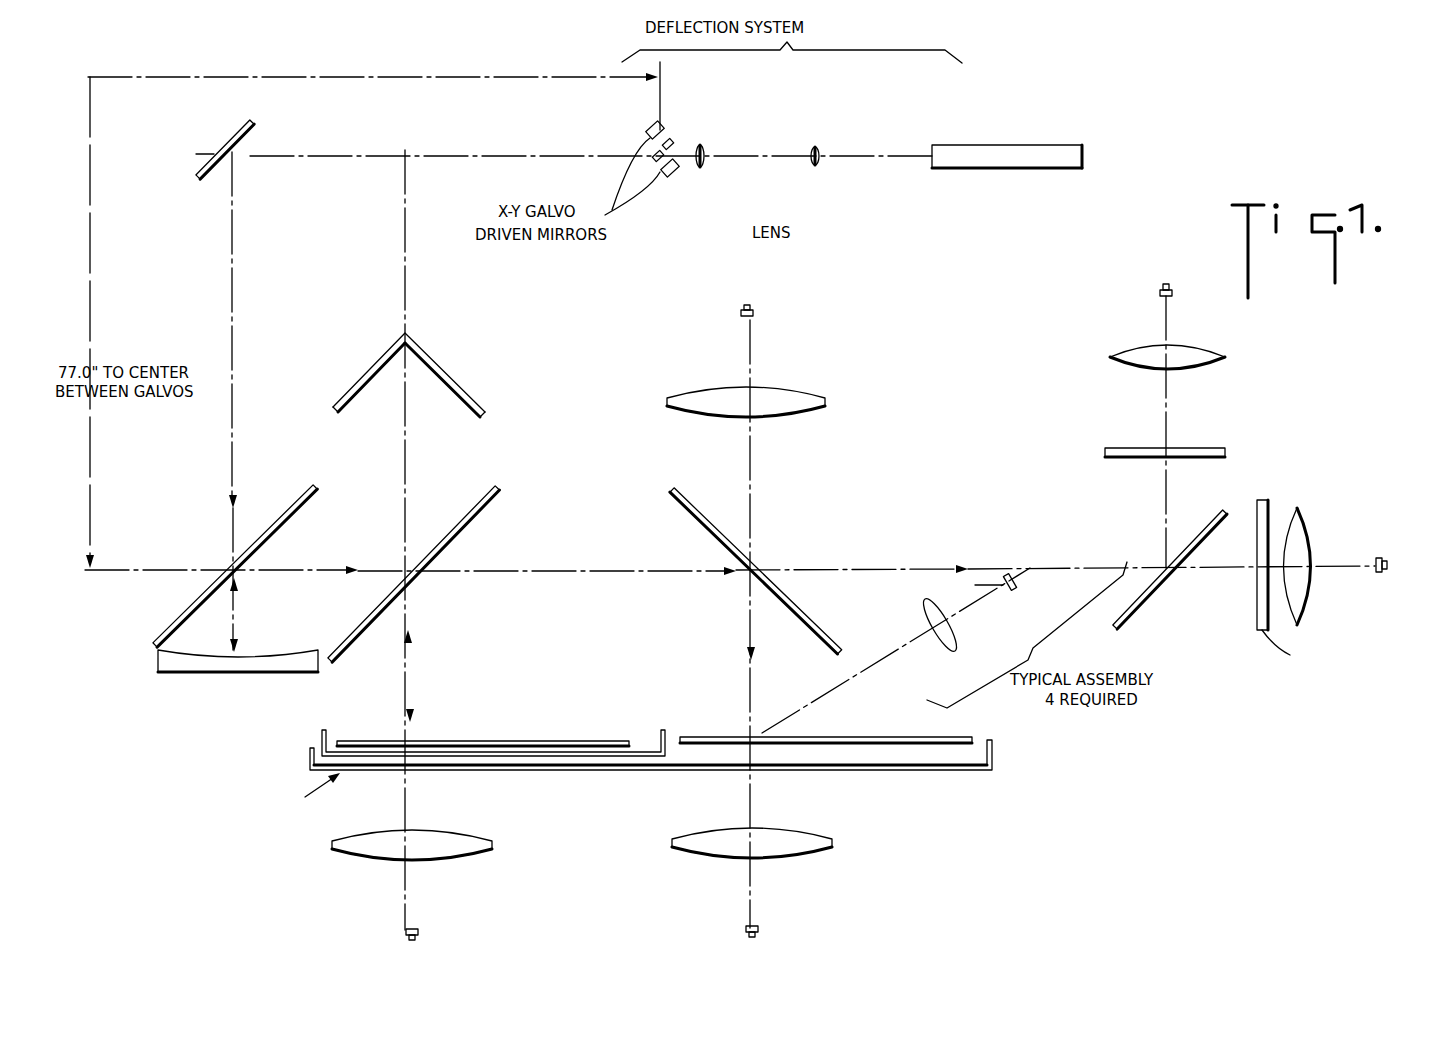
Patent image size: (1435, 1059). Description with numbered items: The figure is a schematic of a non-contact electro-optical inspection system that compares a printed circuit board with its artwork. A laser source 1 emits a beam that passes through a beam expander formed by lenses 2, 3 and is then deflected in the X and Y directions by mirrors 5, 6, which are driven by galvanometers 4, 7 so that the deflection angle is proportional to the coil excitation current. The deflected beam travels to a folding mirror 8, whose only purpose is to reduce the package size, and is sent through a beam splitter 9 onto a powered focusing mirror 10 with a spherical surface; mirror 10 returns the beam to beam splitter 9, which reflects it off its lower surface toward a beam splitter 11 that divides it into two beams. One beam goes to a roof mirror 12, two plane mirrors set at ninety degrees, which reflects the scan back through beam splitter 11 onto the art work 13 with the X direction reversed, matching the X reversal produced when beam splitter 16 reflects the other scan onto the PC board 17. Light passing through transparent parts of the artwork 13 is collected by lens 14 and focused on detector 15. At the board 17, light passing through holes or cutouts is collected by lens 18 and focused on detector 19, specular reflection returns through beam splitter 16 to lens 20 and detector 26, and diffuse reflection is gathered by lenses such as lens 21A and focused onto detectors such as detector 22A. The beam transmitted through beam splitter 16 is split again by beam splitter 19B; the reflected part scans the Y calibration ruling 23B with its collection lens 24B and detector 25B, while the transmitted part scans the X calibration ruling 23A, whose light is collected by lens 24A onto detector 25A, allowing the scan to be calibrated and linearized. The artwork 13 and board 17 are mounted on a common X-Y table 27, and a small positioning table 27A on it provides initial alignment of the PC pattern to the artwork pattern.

The laser source 1 is at (1072, 142).
The lens 2 is at (752, 222).
The lens 3 is at (752, 222).
The galvanometer 4 is at (662, 126).
The mirror 5 is at (670, 140).
The mirror 6 is at (656, 160).
The galvanometer 7 is at (672, 178).
The folding mirror 8 is at (250, 122).
The beam splitter 9 is at (310, 492).
The powered focusing mirror 10 is at (298, 650).
The beam splitter 11 is at (495, 495).
The roof mirror 12 is at (462, 410).
The art work 13 is at (560, 740).
The lens 14 is at (478, 836).
The detector 15 is at (405, 932).
The beam splitter 16 is at (758, 566).
The printed circuit board 17 is at (697, 735).
The lens 18 is at (818, 834).
The detector 19 is at (758, 928).
The beam splitter 19B is at (1160, 590).
The lens 20 is at (812, 392).
The lens 21A is at (950, 622).
The detector 22A is at (1013, 588).
The X calibration ruling 23A is at (1290, 492).
The Y calibration ruling 23B is at (1178, 458).
The lens 24A is at (1305, 545).
The lens 24B is at (1210, 350).
The detector 25A is at (1400, 582).
The detector 25B is at (1155, 293).
The detector 26 is at (754, 313).
The X-Y table 27 is at (992, 762).
The positioning table 27A is at (328, 732).